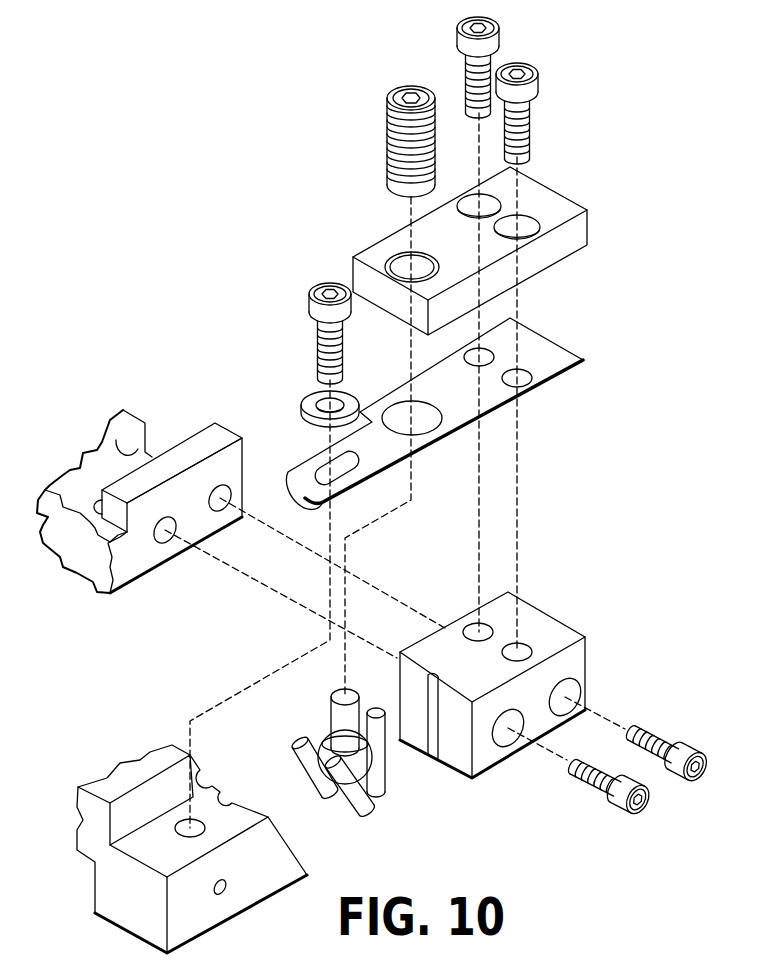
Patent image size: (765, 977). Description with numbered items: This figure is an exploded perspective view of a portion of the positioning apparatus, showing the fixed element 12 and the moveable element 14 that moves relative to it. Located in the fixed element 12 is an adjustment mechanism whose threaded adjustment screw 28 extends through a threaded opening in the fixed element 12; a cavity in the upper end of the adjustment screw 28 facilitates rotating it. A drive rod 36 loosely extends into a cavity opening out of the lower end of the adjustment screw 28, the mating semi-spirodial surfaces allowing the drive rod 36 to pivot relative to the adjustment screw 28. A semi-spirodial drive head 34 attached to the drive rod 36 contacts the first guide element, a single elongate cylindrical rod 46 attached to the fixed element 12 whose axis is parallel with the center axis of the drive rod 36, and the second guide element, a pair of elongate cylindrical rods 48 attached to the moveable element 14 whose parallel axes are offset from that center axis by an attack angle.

The fixed element 12 is at (231, 431).
The moveable element 14 is at (132, 933).
The threaded adjustment screw 28 is at (386, 150).
The semi-spirodial drive head 34 is at (365, 768).
The drive rod 36 is at (330, 715).
The elongate cylindrical rod 46 is at (383, 794).
The elongate cylindrical rods 48 is at (352, 812).